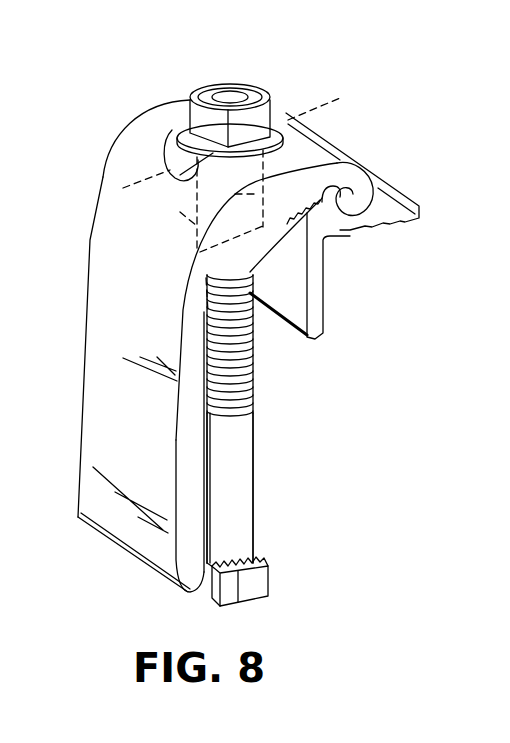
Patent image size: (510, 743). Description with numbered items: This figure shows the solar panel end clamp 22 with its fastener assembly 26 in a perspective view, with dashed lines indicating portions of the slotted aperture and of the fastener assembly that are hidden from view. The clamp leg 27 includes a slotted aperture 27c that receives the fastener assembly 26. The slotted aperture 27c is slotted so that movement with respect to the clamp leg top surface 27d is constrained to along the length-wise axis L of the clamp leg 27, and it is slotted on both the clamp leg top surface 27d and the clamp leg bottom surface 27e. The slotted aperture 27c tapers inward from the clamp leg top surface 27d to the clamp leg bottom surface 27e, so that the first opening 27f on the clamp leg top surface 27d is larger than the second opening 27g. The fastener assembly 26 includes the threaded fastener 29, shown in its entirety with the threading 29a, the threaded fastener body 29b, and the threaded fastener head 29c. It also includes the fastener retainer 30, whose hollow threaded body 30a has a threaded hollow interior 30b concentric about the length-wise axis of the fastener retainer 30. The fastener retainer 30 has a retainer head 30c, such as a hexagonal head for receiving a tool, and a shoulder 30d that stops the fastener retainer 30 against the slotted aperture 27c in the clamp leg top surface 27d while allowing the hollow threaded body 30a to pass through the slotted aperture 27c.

The solar panel end clamp 22 is at (370, 131).
The fastener assembly 26 is at (276, 343).
The clamp leg 27 is at (72, 313).
The slotted aperture 27c is at (175, 190).
The clamp leg top surface 27d is at (190, 103).
The clamp leg bottom surface 27e is at (280, 236).
The first opening 27f is at (170, 153).
The second opening 27g is at (268, 230).
The threaded fastener 29 is at (275, 455).
The threading 29a is at (253, 388).
The threaded fastener body 29b is at (253, 512).
The threaded fastener head 29c is at (272, 582).
The fastener retainer 30 is at (236, 168).
The hollow threaded body 30a is at (196, 237).
The threaded hollow interior 30b is at (230, 96).
The retainer head 30c is at (206, 84).
The shoulder 30d is at (273, 118).
The length-wise axis L is at (240, 137).